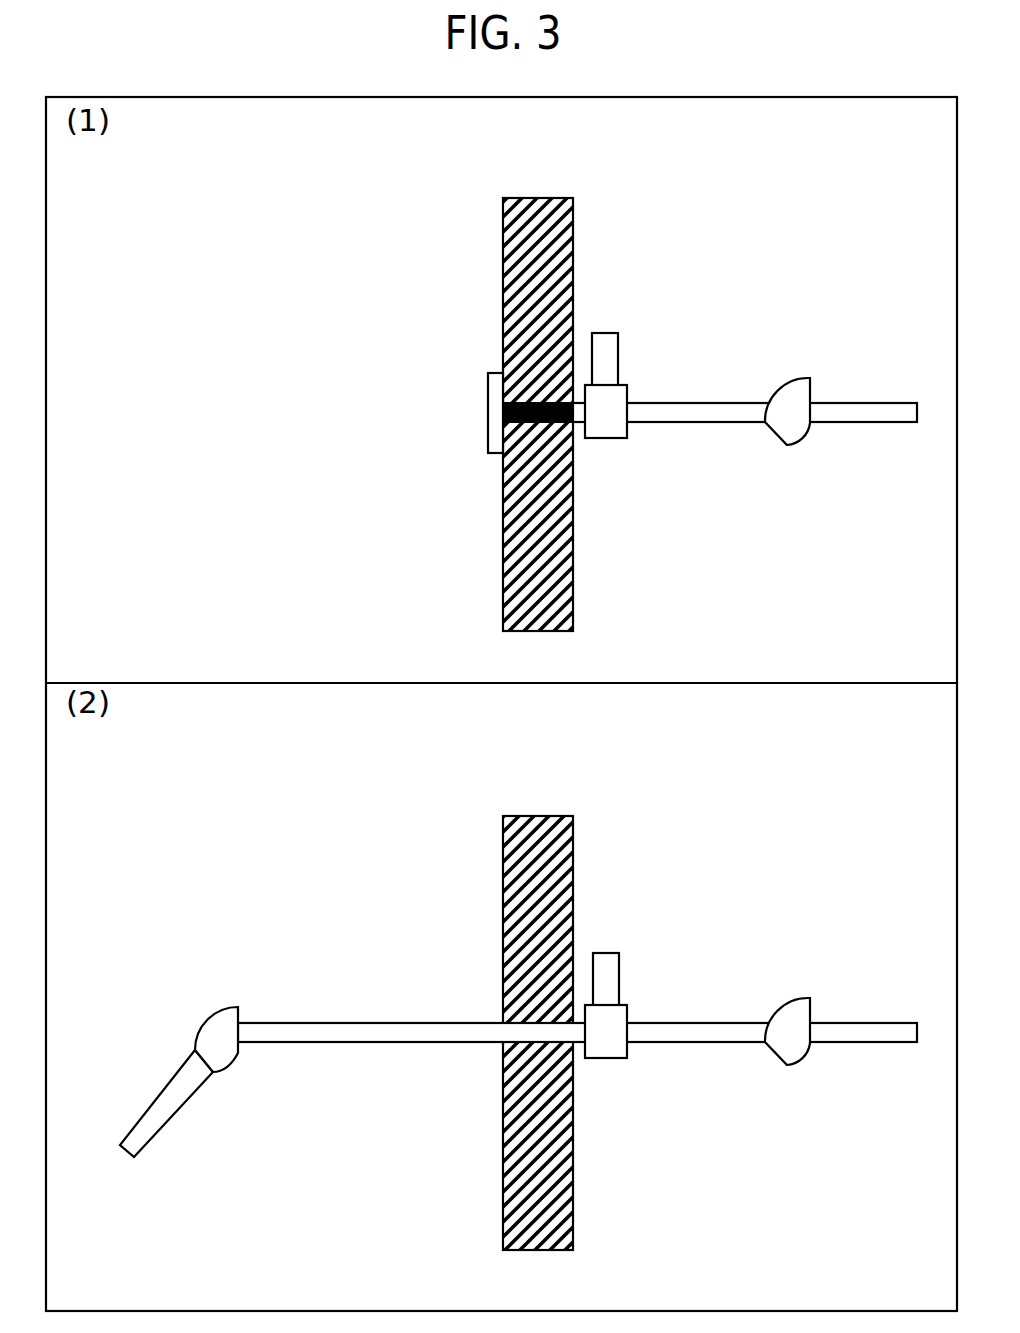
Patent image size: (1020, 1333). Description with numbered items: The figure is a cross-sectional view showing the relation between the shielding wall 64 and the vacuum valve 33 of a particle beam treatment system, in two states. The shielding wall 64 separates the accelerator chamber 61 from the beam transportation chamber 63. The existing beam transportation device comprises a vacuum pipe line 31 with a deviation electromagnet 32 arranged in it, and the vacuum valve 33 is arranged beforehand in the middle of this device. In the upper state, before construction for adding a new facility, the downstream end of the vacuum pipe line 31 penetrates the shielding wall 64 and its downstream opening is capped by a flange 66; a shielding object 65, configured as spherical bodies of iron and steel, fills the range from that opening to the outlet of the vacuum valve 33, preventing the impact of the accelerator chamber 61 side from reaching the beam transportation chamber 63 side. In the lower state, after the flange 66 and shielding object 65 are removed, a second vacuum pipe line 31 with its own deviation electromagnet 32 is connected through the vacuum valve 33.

The vacuum pipe line 31 is at (868, 422).
The deviation electromagnet 32 is at (787, 447).
The vacuum valve 33 is at (605, 333).
The accelerator chamber 61 is at (829, 281).
The beam transportation chamber 63 is at (374, 883).
The shielding wall 64 is at (533, 198).
The shielding object 65 is at (537, 417).
The flange 66 is at (490, 393).